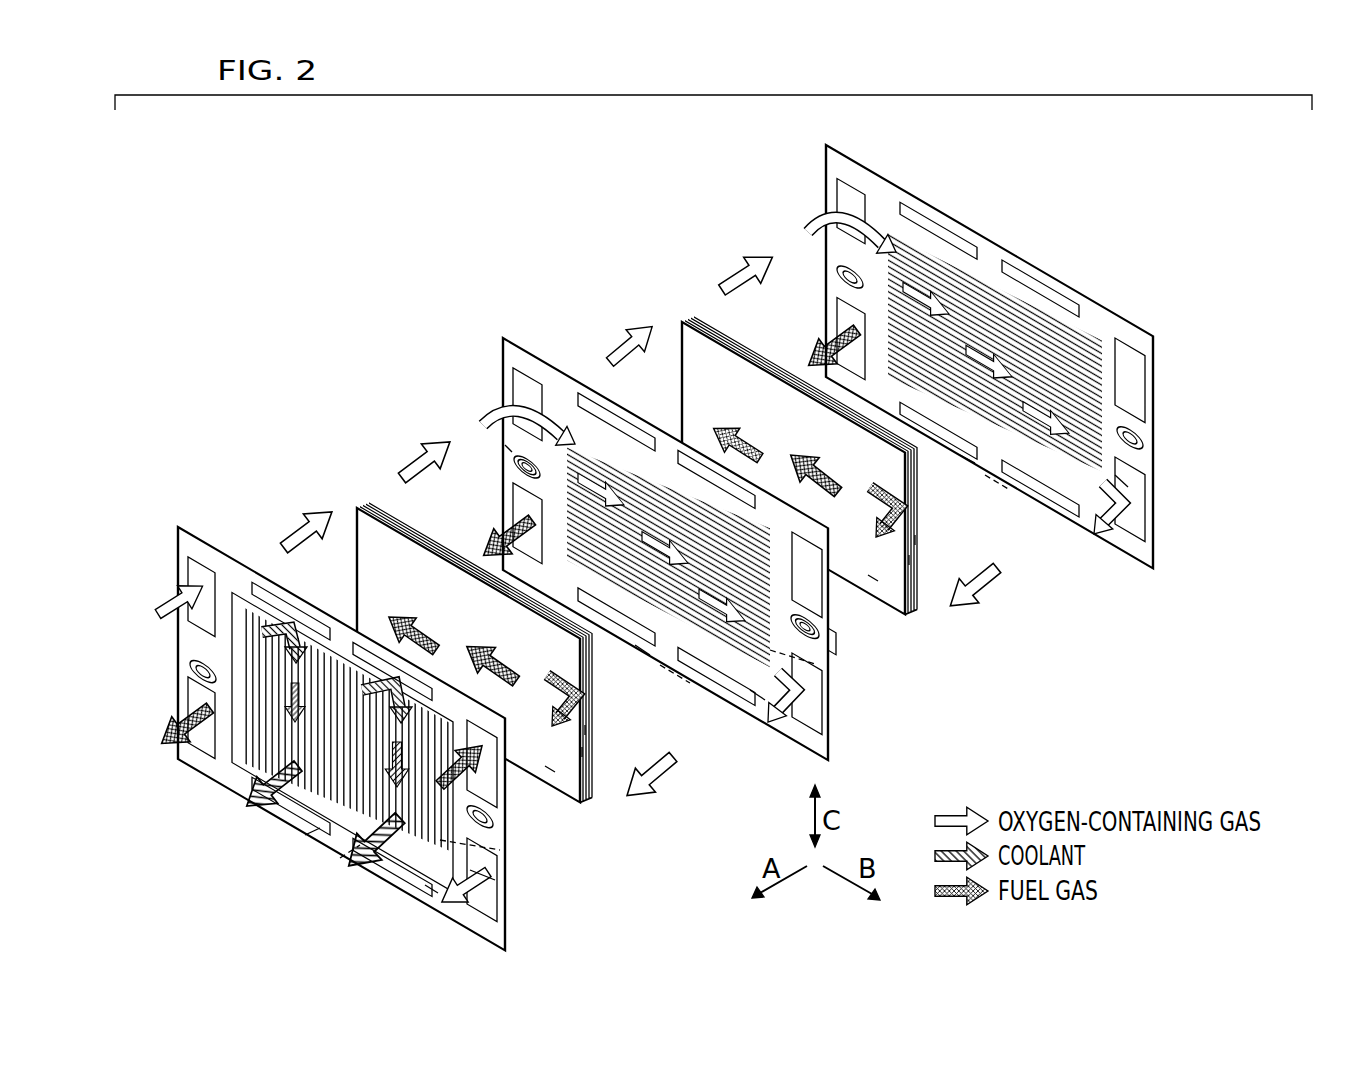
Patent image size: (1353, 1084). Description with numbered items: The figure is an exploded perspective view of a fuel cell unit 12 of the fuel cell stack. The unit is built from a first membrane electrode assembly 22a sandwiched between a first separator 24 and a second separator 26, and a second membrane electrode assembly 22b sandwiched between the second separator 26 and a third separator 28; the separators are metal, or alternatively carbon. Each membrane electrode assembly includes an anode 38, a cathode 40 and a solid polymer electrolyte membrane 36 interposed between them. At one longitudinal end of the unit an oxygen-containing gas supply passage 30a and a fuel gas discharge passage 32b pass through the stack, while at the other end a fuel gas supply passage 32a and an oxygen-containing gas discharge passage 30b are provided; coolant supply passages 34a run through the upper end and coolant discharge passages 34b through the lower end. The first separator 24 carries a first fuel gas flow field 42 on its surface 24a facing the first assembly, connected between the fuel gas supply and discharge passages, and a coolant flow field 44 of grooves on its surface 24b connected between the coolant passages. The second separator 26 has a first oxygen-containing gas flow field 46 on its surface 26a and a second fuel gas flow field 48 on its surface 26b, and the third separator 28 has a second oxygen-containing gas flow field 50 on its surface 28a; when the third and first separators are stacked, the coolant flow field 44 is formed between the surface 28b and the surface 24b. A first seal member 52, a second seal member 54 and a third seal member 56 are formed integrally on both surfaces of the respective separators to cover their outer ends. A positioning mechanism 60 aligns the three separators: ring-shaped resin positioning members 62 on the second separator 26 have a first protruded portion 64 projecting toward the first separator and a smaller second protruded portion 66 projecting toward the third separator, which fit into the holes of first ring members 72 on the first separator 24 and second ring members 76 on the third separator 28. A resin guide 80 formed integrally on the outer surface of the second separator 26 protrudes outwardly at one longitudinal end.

The fuel cell unit 12 is at (172, 285).
The first separator 24 is at (175, 527).
The first membrane electrode assembly 22a is at (355, 508).
The second separator 26 is at (500, 336).
The second membrane electrode assembly 22b is at (680, 320).
The third separator 28 is at (822, 147).
The oxygen-containing gas supply passage 30a is at (838, 190).
The oxygen-containing gas discharge passage 30b is at (1132, 505).
The fuel gas supply passage 32a is at (1140, 360).
The fuel gas discharge passage 32b is at (838, 312).
The coolant supply passages 34a is at (940, 228).
The coolant discharge passages 34b is at (1040, 497).
The solid polymer electrolyte membrane 36 is at (909, 560).
The anode 38 is at (873, 578).
The cathode 40 is at (915, 540).
The first fuel gas flow field 42 is at (500, 850).
The coolant flow field 44 is at (495, 880).
The first oxygen-containing gas flow field 46 is at (820, 690).
The second fuel gas flow field 48 is at (832, 663).
The second oxygen-containing gas flow field 50 is at (1128, 487).
The first seal member 52 is at (433, 895).
The second seal member 54 is at (758, 700).
The third seal member 56 is at (1085, 525).
The positioning mechanism 60 is at (452, 432).
The positioning member 62 is at (505, 445).
The first protruded portion 64 is at (520, 470).
The second protruded portion 66 is at (513, 461).
The first ring member 72 is at (196, 670).
The second ring member 76 is at (838, 277).
The guide 80 is at (838, 640).
The surface of the first separator 24a is at (345, 860).
The surface of the first separator 24b is at (312, 838).
The surface of the second separator 26a is at (642, 652).
The surface of the second separator 26b is at (672, 677).
The surface of the third separator 28a is at (972, 462).
The surface of the third separator 28b is at (1000, 488).